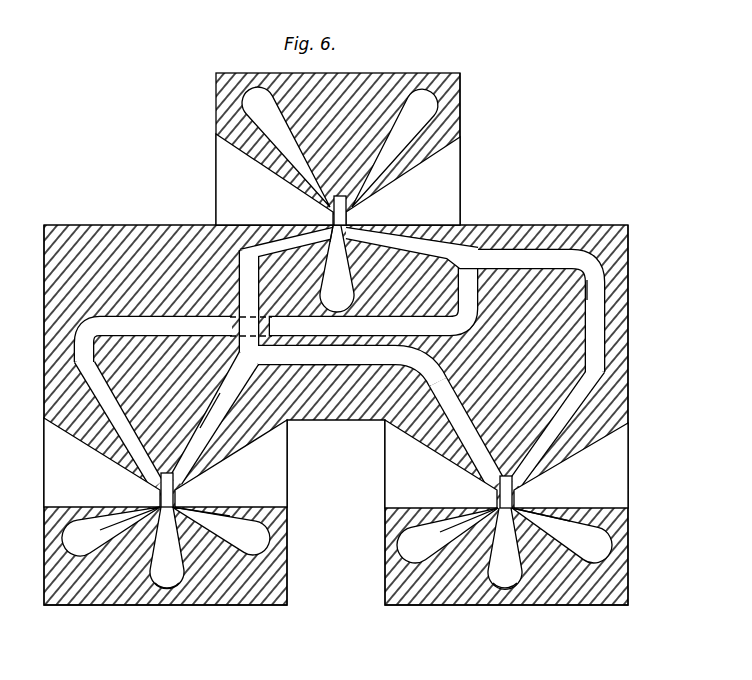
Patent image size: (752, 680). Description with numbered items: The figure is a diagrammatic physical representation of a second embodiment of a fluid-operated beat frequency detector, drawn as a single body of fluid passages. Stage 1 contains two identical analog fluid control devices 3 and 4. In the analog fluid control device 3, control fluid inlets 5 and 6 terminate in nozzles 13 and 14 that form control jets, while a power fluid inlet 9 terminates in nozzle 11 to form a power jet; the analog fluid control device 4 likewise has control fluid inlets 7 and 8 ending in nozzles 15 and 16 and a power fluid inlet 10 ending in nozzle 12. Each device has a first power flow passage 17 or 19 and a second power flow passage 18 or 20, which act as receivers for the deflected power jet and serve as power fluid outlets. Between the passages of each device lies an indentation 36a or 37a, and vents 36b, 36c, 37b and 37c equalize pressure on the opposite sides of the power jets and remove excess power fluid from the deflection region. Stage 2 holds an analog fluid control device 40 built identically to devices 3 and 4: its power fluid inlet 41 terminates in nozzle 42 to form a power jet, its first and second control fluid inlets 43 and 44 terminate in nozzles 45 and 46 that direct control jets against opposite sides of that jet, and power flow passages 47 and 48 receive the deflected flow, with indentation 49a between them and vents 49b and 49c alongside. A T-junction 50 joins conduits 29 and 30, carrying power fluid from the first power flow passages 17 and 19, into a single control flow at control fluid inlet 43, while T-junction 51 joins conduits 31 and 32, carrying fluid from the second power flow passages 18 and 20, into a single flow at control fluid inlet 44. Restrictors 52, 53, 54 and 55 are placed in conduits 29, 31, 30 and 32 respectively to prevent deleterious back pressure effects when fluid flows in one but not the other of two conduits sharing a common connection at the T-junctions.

The stage 1 is at (634, 264).
The stage 2 is at (478, 123).
The analog fluid control device 3 is at (25, 394).
The analog fluid control device 4 is at (628, 400).
The control fluid inlet 5 is at (70, 540).
The control fluid inlet 6 is at (262, 538).
The control fluid inlet 7 is at (410, 545).
The control fluid inlet 8 is at (600, 545).
The power fluid inlet 9 is at (162, 582).
The power fluid inlet 10 is at (505, 582).
The nozzle 11 is at (167, 548).
The nozzle 12 is at (505, 548).
The nozzle 13 is at (118, 512).
The nozzle 14 is at (206, 512).
The nozzle 15 is at (470, 514).
The nozzle 16 is at (551, 512).
The first power flow passage 17 is at (200, 436).
The second power flow passage 18 is at (122, 428).
The first power flow passage 19 is at (452, 455).
The second power flow passage 20 is at (565, 426).
The conduit 29 is at (221, 393).
The conduit 30 is at (446, 395).
The conduit 31 is at (136, 328).
The conduit 32 is at (598, 343).
The indentation 36a is at (166, 490).
The vent 36b is at (63, 450).
The vent 36c is at (272, 465).
The indentation 37a is at (506, 492).
The vent 37b is at (388, 466).
The vent 37c is at (622, 472).
The analog fluid control device 40 is at (460, 93).
The power fluid inlet 41 is at (345, 292).
The nozzle 42 is at (337, 250).
The first control fluid inlet 43 is at (262, 255).
The second control fluid inlet 44 is at (437, 240).
The nozzle 45 is at (304, 240).
The nozzle 46 is at (395, 246).
The power flow passage 47 is at (380, 140).
The power flow passage 48 is at (292, 127).
The indentation 49a is at (342, 211).
The vent 49b is at (228, 183).
The vent 49c is at (462, 166).
The T-junction 50 is at (256, 346).
The T-junction 51 is at (477, 255).
The restrictor 52 is at (243, 350).
The restrictor 53 is at (470, 285).
The restrictor 54 is at (340, 352).
The restrictor 55 is at (596, 292).